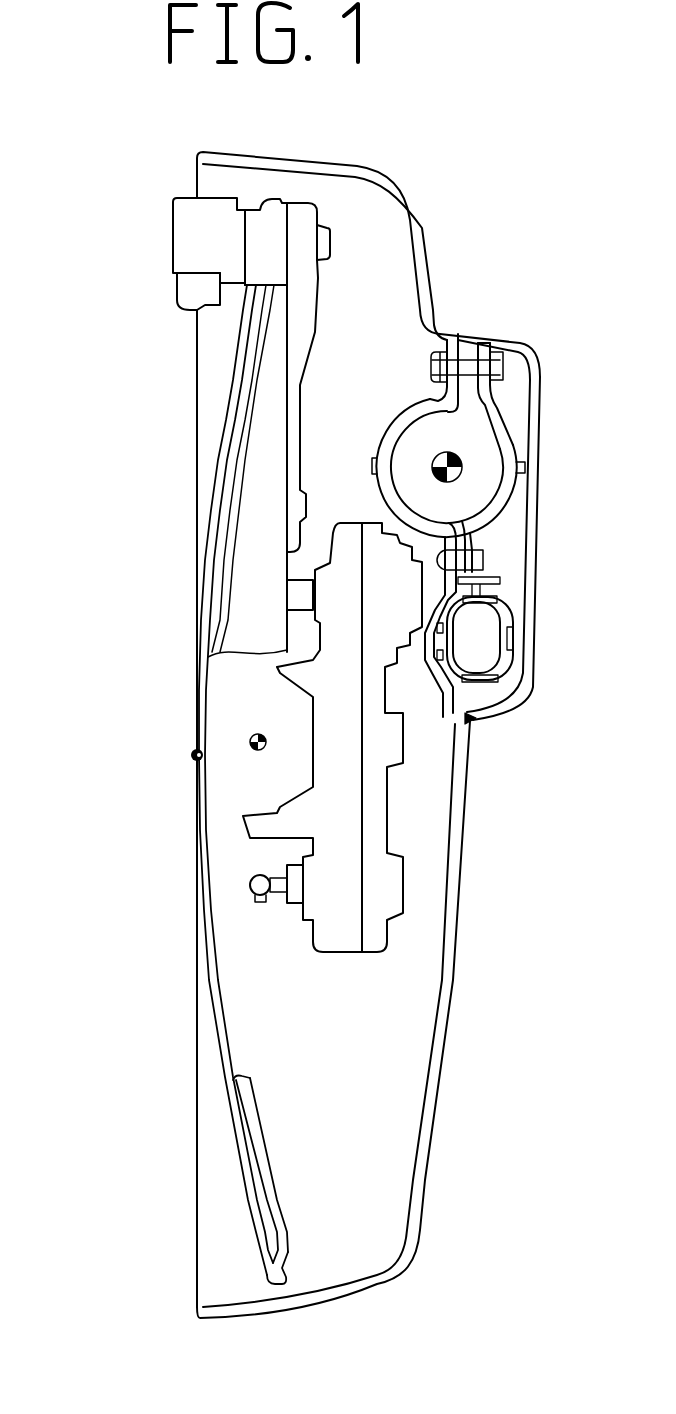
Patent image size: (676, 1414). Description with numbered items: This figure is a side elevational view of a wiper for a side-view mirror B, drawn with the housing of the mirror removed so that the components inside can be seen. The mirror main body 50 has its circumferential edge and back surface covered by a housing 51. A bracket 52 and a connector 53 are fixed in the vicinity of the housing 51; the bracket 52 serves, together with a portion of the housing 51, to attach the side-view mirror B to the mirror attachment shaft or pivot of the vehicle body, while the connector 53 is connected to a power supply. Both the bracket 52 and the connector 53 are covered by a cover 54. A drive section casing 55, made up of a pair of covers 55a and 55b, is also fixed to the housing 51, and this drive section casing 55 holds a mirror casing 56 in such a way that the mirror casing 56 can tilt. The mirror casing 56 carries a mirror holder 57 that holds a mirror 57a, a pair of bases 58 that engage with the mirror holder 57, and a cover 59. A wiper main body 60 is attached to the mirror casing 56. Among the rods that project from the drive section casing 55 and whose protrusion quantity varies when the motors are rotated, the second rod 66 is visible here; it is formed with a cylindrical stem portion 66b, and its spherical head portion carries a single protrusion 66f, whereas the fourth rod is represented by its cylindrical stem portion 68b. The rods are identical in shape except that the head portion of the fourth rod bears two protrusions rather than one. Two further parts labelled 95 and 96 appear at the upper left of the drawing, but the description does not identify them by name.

The mirror main body 50 is at (172, 1018).
The housing 51 is at (411, 1208).
The bracket 52 is at (503, 437).
The connector 53 is at (483, 658).
The cover 54 is at (531, 572).
The drive section casing 55 is at (433, 745).
The cover 55a is at (343, 877).
The cover 55b is at (375, 935).
The mirror casing 56 is at (352, 320).
The mirror holder 57 is at (273, 1210).
The mirror 57a is at (262, 1183).
The base 58 is at (270, 218).
The cover 59 is at (323, 242).
The wiper main body 60 is at (160, 205).
The second rod 66 is at (280, 890).
The cylindrical stem portion 66b is at (287, 860).
The protrusion 66f is at (255, 895).
The cylindrical stem portion 68b is at (287, 593).
The bracket 95 is at (185, 237).
The bracket foot 96 is at (185, 290).
The side-view mirror B is at (97, 425).